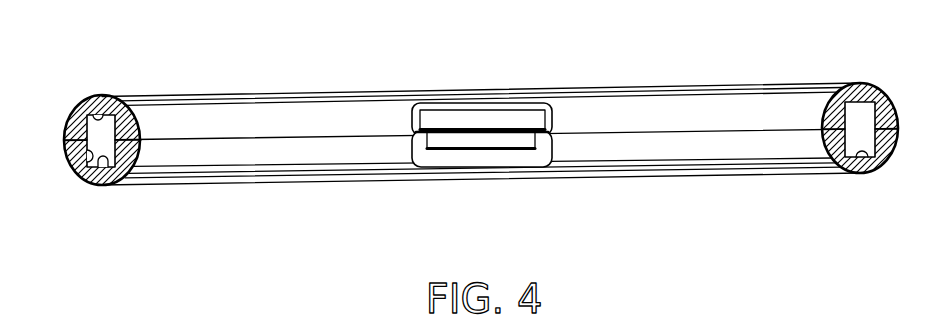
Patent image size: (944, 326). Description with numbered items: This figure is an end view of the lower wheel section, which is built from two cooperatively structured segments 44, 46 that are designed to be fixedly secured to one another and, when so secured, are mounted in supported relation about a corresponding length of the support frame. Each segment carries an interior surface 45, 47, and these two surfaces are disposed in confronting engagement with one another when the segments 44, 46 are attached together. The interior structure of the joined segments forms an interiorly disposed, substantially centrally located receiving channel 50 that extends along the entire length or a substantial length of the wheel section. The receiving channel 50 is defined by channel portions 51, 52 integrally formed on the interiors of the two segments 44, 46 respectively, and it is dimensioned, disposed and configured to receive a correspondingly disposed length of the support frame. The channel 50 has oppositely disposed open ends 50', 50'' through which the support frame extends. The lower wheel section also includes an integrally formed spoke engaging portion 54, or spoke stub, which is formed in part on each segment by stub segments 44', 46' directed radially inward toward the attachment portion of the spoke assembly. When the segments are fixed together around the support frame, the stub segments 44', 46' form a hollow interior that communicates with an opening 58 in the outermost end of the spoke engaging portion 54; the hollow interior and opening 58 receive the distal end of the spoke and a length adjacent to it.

The segment 44 is at (481, 62).
The stub segment 44' is at (481, 64).
The interior surface 45 is at (225, 138).
The segment 46 is at (481, 216).
The stub segment 46' is at (483, 202).
The interior surface 47 is at (288, 136).
The receiving channel 50 is at (81, 150).
The open end 50' is at (112, 208).
The open end 50'' is at (860, 167).
The channel portion 51 is at (92, 117).
The channel portion 52 is at (96, 165).
The spoke engaging portion 54 is at (440, 117).
The opening 58 is at (460, 145).